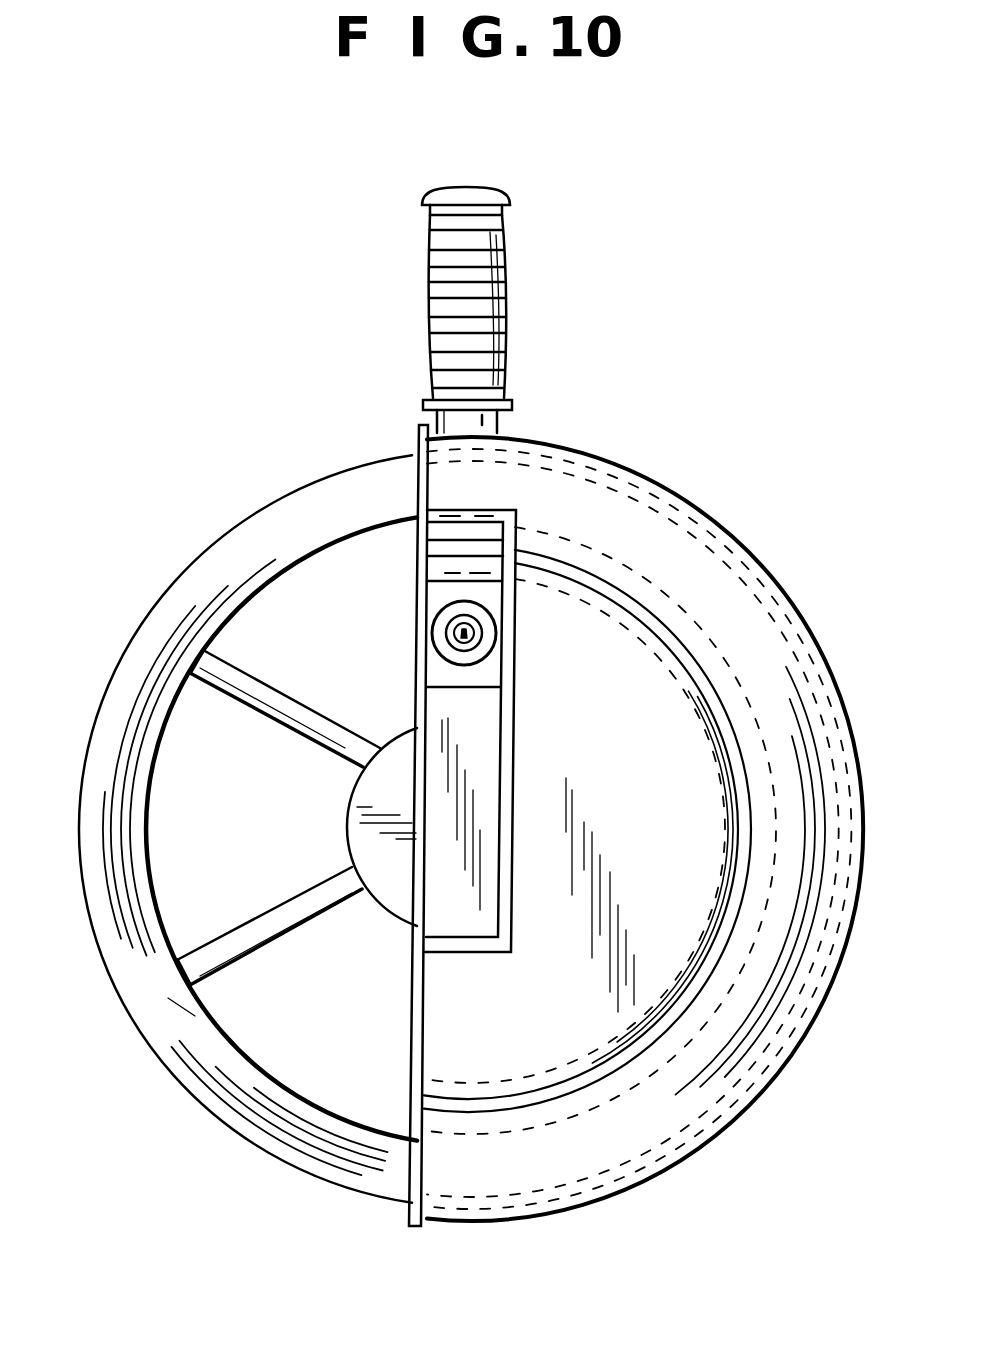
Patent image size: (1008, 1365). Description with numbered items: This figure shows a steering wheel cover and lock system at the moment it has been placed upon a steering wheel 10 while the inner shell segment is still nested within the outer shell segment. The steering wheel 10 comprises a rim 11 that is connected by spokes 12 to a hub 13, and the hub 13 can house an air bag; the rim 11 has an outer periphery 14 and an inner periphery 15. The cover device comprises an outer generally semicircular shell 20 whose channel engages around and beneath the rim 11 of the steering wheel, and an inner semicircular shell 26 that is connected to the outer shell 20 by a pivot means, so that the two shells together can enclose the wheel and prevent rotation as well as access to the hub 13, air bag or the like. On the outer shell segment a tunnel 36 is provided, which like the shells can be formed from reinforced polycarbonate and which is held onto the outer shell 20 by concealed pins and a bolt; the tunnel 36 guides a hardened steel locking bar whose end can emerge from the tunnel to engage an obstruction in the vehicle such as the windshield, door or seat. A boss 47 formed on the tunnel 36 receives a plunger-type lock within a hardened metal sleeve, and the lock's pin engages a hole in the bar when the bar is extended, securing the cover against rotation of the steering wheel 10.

The steering wheel 10 is at (111, 673).
The rim 11 is at (228, 1060).
The spokes 12 is at (290, 710).
The hub 13 is at (375, 846).
The outer periphery 14 is at (112, 972).
The inner periphery 15 is at (155, 764).
The outer generally semicircular shell 20 is at (687, 501).
The inner semicircular shell 26 is at (738, 637).
The tunnel 36 is at (480, 723).
The boss 47 is at (434, 626).